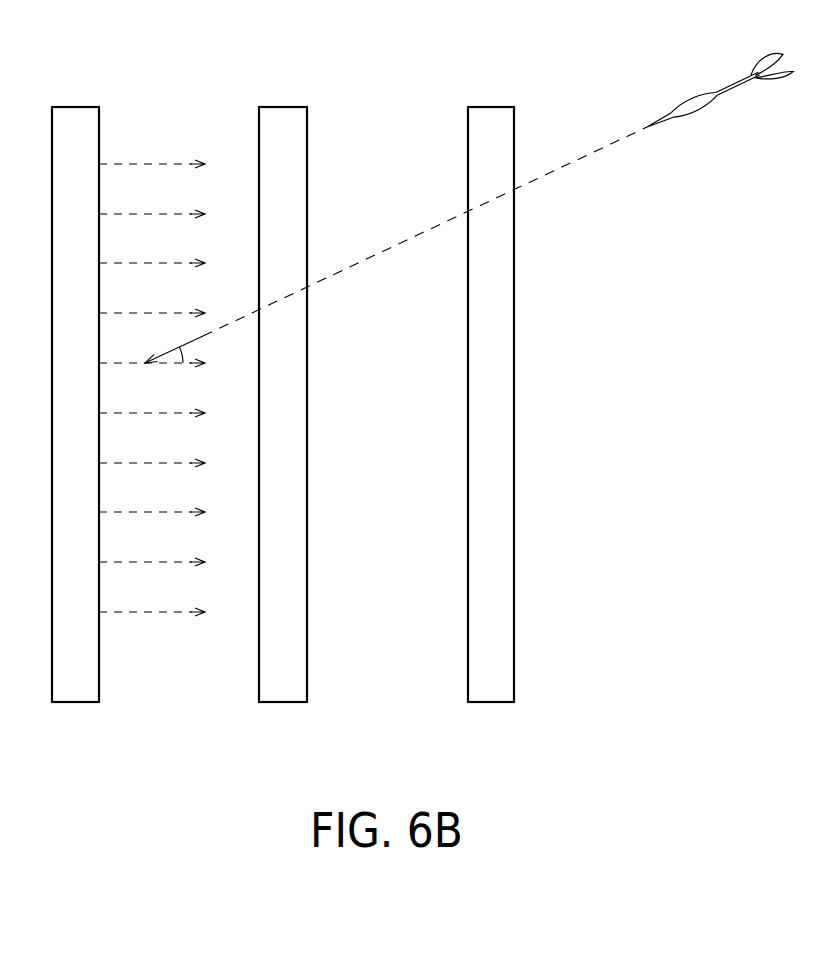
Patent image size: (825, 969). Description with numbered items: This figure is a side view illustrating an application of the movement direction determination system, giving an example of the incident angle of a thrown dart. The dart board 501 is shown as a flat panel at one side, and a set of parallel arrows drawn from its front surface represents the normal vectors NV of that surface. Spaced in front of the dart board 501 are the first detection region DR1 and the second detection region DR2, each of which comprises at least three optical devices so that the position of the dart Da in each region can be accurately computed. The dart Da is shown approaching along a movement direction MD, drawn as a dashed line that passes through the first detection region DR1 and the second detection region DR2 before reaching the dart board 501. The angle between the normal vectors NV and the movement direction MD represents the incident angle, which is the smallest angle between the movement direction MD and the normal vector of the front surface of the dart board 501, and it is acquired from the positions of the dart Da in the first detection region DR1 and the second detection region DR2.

The dart board 501 is at (77, 107).
The second detection region DR2 is at (282, 107).
The first detection region DR1 is at (493, 107).
The normal vector NV is at (150, 164).
The movement direction MD is at (396, 245).
The dart Da is at (737, 90).